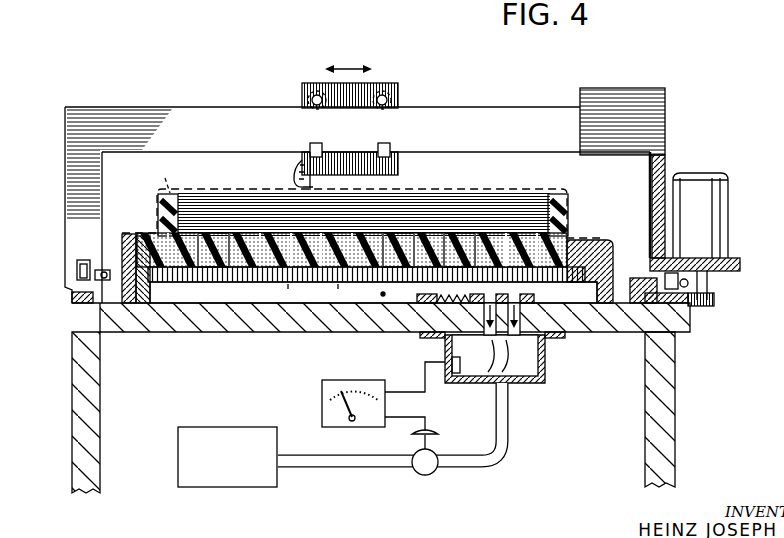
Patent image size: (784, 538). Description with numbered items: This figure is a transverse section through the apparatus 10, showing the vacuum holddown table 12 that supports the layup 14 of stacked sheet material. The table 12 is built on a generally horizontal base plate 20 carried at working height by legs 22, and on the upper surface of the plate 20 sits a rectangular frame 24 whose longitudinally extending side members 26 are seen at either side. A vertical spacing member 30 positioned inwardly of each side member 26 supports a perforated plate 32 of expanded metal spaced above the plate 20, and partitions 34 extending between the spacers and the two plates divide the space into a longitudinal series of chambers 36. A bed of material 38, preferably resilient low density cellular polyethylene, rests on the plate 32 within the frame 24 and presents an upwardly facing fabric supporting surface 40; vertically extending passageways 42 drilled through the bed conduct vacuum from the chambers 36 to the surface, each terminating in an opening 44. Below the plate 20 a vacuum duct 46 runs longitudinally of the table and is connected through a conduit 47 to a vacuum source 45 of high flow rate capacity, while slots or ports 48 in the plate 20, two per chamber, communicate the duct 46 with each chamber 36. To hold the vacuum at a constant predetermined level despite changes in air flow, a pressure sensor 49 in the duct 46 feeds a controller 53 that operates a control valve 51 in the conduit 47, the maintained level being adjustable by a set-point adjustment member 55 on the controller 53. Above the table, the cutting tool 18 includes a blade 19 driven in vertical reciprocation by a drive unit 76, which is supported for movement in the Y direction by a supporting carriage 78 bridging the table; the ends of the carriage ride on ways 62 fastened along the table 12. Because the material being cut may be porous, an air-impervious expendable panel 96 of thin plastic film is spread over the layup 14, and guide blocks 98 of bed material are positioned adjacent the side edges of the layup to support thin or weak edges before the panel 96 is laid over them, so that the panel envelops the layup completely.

The apparatus 10 is at (603, 93).
The vacuum holddown table 12 is at (683, 353).
The layup 14 is at (498, 206).
The cutting tool 18 is at (461, 107).
The blade 19 is at (296, 176).
The base plate 20 is at (235, 326).
The legs 22 is at (100, 339).
The frame 24 is at (125, 260).
The side members 26 is at (132, 278).
The vertical spacing member 30 is at (150, 289).
The perforated plate 32 is at (290, 286).
The partitions 34 is at (340, 296).
The chambers 36 is at (383, 296).
The bed of material 38 is at (247, 233).
The fabric supporting surface 40 is at (209, 233).
The passageways 42 is at (400, 267).
The opening 44 is at (450, 267).
The vacuum source 45 is at (198, 488).
The vacuum duct 46 is at (545, 366).
The conduit 47 is at (333, 467).
The ports 48 is at (475, 335).
The pressure sensor 49 is at (458, 384).
The control valve 51 is at (432, 474).
The controller 53 is at (322, 390).
The set-point adjustment member 55 is at (348, 411).
The ways 62 is at (72, 293).
The drive unit 76 is at (378, 83).
The supporting carriage 78 is at (196, 120).
The expendable panel 96 is at (164, 184).
The guide blocks 98 is at (163, 208).